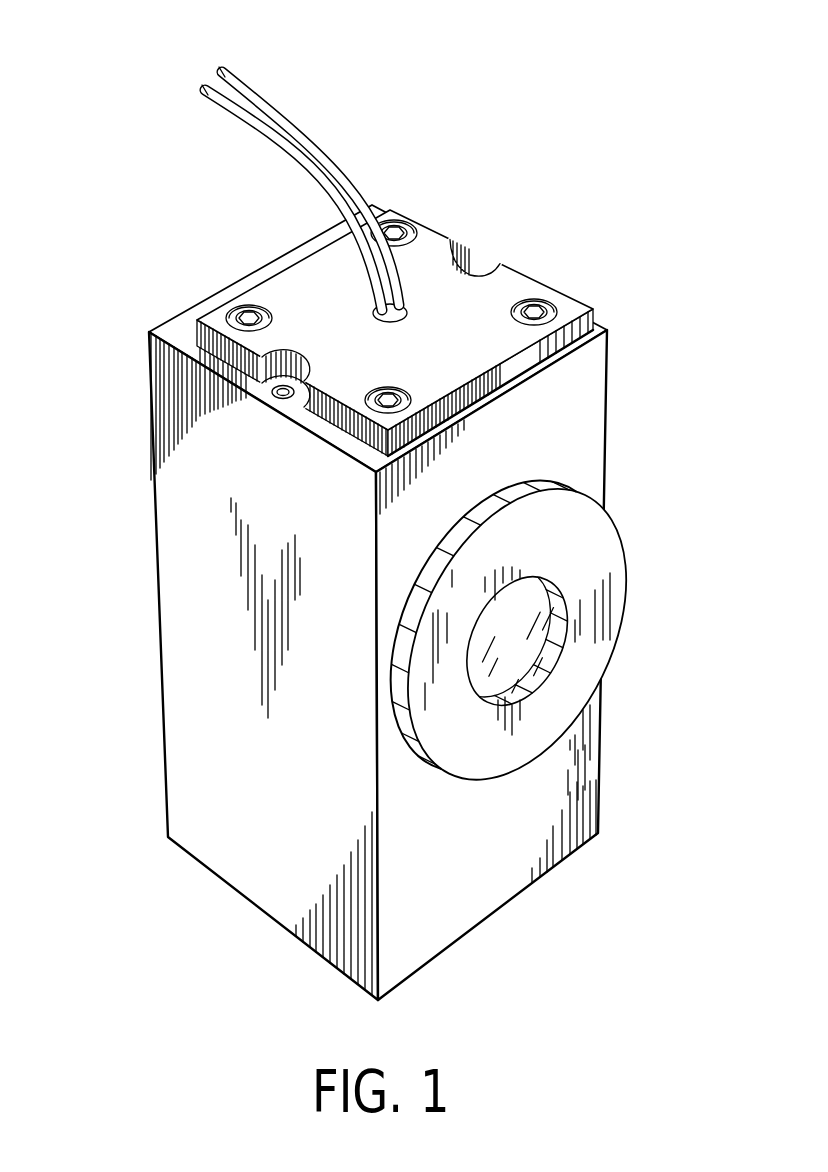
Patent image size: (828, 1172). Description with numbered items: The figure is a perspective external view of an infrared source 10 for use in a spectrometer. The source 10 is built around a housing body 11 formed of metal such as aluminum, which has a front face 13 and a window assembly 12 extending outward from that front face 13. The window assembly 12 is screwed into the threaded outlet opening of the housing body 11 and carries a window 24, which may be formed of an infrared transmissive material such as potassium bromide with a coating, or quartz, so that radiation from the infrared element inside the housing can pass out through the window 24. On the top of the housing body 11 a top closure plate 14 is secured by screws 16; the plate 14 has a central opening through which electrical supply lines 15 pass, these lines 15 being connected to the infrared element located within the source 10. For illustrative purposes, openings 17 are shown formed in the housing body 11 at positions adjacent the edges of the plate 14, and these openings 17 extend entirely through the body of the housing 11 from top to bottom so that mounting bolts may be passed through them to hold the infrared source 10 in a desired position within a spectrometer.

The infrared source 10 is at (403, 504).
The housing body 11 is at (212, 747).
The window assembly 12 is at (549, 650).
The front face 13 is at (560, 434).
The top closure plate 14 is at (398, 298).
The electrical supply lines 15 is at (270, 90).
The screws 16 is at (263, 308).
The openings 17 is at (462, 252).
The window 24 is at (530, 640).